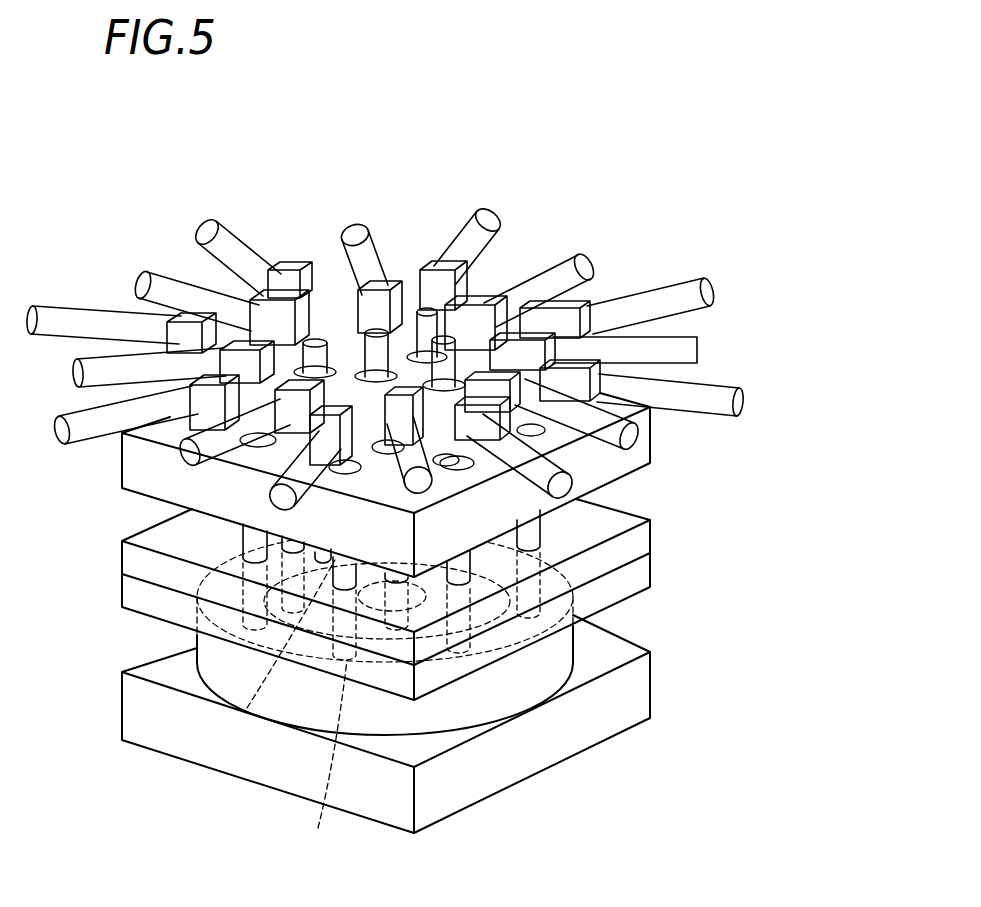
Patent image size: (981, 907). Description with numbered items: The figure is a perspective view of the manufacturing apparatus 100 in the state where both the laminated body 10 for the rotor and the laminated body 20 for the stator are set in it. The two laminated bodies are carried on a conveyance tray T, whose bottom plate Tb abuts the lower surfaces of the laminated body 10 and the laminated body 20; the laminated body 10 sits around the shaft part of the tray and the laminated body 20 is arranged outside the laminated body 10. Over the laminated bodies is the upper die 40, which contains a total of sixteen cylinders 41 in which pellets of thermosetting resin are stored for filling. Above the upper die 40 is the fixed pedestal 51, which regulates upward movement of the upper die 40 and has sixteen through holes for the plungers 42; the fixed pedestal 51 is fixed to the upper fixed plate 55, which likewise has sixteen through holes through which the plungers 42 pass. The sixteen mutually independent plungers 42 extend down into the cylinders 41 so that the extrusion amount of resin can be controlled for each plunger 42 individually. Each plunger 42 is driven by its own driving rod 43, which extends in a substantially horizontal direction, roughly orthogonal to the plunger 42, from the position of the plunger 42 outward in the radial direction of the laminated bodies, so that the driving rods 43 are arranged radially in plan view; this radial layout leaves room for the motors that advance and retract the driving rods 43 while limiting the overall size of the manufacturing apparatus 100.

The manufacturing apparatus 100 is at (623, 168).
The laminated body for the rotor 10 is at (247, 708).
The laminated body for the stator 20 is at (297, 705).
The upper die 40 is at (640, 571).
The cylinder 41 is at (327, 756).
The plunger 42 is at (325, 347).
The driving rod 43 is at (88, 320).
The fixed pedestal 51 is at (640, 535).
The upper fixed plate 55 is at (637, 450).
The conveyance tray T is at (472, 788).
The bottom plate Tb is at (403, 747).